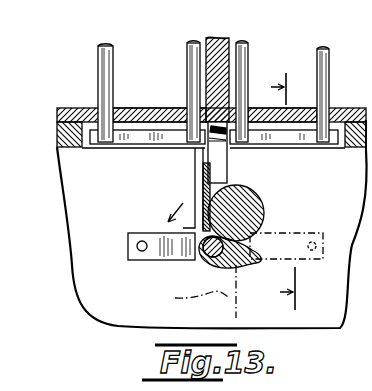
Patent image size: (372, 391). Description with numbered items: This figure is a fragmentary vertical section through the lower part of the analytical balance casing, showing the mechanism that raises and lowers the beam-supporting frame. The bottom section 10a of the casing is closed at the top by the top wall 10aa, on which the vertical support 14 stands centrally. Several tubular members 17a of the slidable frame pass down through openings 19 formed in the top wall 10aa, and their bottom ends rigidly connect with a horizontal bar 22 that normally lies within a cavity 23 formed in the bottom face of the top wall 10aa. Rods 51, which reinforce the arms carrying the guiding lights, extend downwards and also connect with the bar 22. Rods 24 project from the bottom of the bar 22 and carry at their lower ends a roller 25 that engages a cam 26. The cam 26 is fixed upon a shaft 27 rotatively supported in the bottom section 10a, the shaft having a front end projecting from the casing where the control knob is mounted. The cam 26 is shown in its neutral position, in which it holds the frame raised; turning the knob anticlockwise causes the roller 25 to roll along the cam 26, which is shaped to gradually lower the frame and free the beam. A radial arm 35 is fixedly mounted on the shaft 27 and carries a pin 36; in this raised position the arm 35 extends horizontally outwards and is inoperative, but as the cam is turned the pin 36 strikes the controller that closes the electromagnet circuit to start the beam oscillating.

The bottom section 10a is at (80, 197).
The top wall 10aa is at (80, 103).
The vertical support 14 is at (222, 41).
The tubular members 17a is at (193, 58).
The openings 19 is at (168, 108).
The horizontal bar 22 is at (138, 145).
The cavity 23 is at (83, 147).
The rods 24 is at (216, 163).
The roller 25 is at (205, 173).
The cam 26 is at (256, 208).
The shaft 27 is at (205, 263).
The radial arm 35 is at (143, 233).
The pin 36 is at (139, 241).
The rods 51 is at (105, 68).